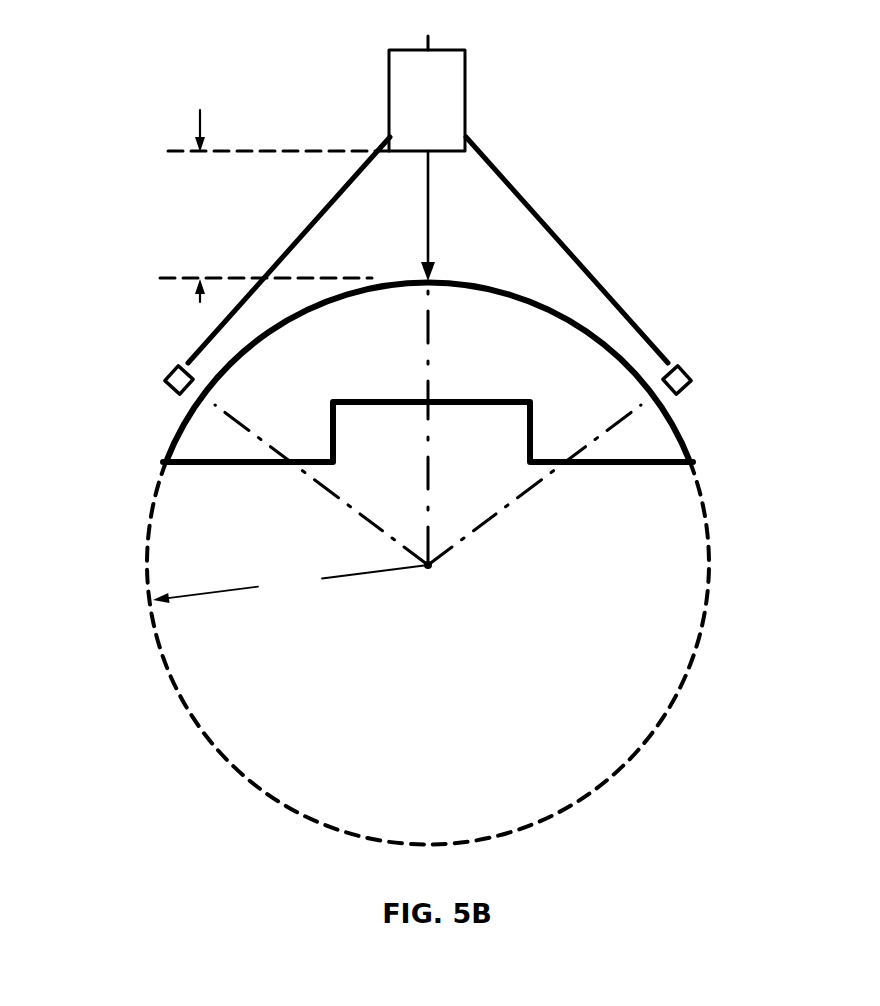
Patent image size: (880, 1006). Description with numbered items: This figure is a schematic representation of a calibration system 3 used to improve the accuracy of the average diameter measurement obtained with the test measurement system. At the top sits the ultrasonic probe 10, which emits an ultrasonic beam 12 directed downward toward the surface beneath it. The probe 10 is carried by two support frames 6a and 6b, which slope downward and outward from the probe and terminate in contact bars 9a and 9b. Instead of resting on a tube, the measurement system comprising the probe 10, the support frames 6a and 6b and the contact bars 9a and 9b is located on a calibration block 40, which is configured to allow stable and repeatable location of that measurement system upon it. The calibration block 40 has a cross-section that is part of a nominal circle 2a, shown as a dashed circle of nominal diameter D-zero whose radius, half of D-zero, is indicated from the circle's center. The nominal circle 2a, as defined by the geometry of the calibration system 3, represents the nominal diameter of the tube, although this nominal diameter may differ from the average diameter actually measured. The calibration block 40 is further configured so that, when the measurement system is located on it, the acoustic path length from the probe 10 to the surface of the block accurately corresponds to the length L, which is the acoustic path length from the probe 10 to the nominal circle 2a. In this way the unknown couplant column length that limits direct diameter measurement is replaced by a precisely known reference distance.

The calibration system 3 is at (646, 181).
The ultrasonic probe 10 is at (407, 87).
The ultrasonic beam 12 is at (426, 229).
The support frame 6a is at (199, 344).
The support frame 6b is at (594, 272).
The contact bar 9a is at (182, 392).
The contact bar 9b is at (680, 390).
The calibration block 40 is at (208, 440).
The nominal circle 2a is at (158, 632).